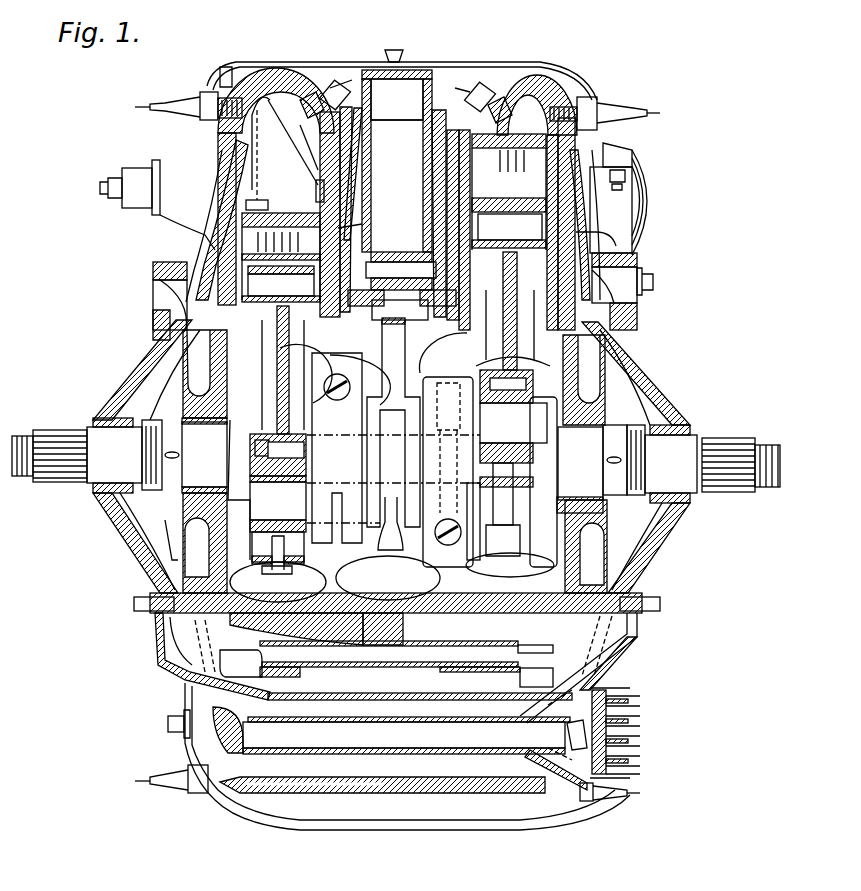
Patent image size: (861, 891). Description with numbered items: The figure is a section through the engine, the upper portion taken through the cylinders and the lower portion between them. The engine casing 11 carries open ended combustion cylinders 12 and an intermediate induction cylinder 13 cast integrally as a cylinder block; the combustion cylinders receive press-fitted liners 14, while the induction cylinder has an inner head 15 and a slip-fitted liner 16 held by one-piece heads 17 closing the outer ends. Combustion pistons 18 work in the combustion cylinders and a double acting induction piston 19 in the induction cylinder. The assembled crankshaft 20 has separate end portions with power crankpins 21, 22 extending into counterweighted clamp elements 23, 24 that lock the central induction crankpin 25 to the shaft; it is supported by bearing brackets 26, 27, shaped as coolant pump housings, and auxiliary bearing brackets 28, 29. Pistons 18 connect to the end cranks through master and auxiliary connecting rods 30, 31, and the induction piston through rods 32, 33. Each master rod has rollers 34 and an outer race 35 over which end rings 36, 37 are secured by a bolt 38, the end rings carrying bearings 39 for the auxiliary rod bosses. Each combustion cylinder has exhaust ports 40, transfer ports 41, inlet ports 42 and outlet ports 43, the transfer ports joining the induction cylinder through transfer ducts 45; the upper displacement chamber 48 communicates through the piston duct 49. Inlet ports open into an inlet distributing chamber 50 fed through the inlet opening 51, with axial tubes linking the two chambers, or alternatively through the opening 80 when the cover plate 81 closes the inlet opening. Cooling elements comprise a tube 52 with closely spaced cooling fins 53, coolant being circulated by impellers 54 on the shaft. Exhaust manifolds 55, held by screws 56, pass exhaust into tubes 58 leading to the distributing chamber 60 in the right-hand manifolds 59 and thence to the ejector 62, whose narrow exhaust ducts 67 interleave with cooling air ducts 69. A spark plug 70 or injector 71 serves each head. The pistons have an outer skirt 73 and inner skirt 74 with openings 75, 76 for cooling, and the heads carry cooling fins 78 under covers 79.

The engine casing 11 is at (218, 131).
The combustion cylinder 12 is at (230, 200).
The induction cylinder 13 is at (458, 300).
The liner 14 is at (215, 150).
The inner head 15 is at (398, 365).
The liner 16 is at (458, 282).
The heads 17 is at (283, 72).
The combustion piston 18 is at (276, 213).
The induction piston 19 is at (371, 148).
The crankshaft 20 is at (62, 458).
The power crankpin 21 is at (258, 498).
The power crankpin 22 is at (520, 420).
The counterweighted clamp element 23 is at (352, 412).
The counterweighted clamp element 24 is at (460, 550).
The central induction crankpin 25 is at (366, 450).
The bearing bracket 26 is at (200, 420).
The bearing bracket 27 is at (580, 500).
The auxiliary bearing bracket 28 is at (138, 374).
The auxiliary bearing bracket 29 is at (655, 395).
The master connecting rod 30 is at (277, 366).
The auxiliary connecting rod 31 is at (274, 596).
The rod 32 is at (396, 358).
The rod 33 is at (389, 535).
The rollers 34 is at (287, 478).
The outer race 35 is at (284, 520).
The end ring 36 is at (252, 466).
The end ring 37 is at (300, 470).
The bolt 38 is at (300, 447).
The bearings 39 is at (278, 567).
The exhaust port 40 is at (262, 200).
The transfer port 41 is at (316, 190).
The inlet port 42 is at (225, 218).
The outlet port 43 is at (318, 200).
The transfer duct 45 is at (352, 192).
The displacement chamber 48 is at (423, 129).
The piston duct 49 is at (352, 212).
The inlet distributing chamber 50 is at (178, 284).
The inlet opening 51 is at (155, 264).
The tube 52 is at (316, 672).
The cooling fins 53 is at (350, 708).
The impeller 54 is at (170, 558).
The exhaust manifold 55 is at (185, 686).
The screw 56 is at (168, 726).
The exhaust tube 58 is at (376, 718).
The exhaust manifold 59 is at (535, 788).
The exhaust gas distributing chamber 60 is at (540, 750).
The exhaust gas ejector 62 is at (638, 688).
The narrow duct 67 is at (640, 732).
The narrow duct 69 is at (640, 758).
The spark plug 70 is at (180, 104).
The injector 71 is at (332, 86).
The outer skirt 73 is at (281, 293).
The inner skirt 74 is at (281, 289).
The opening 75 is at (271, 249).
The opening 76 is at (292, 252).
The cooling fins 78 is at (228, 67).
The cover 79 is at (402, 67).
The opening 80 is at (644, 278).
The cover plate 81 is at (638, 315).